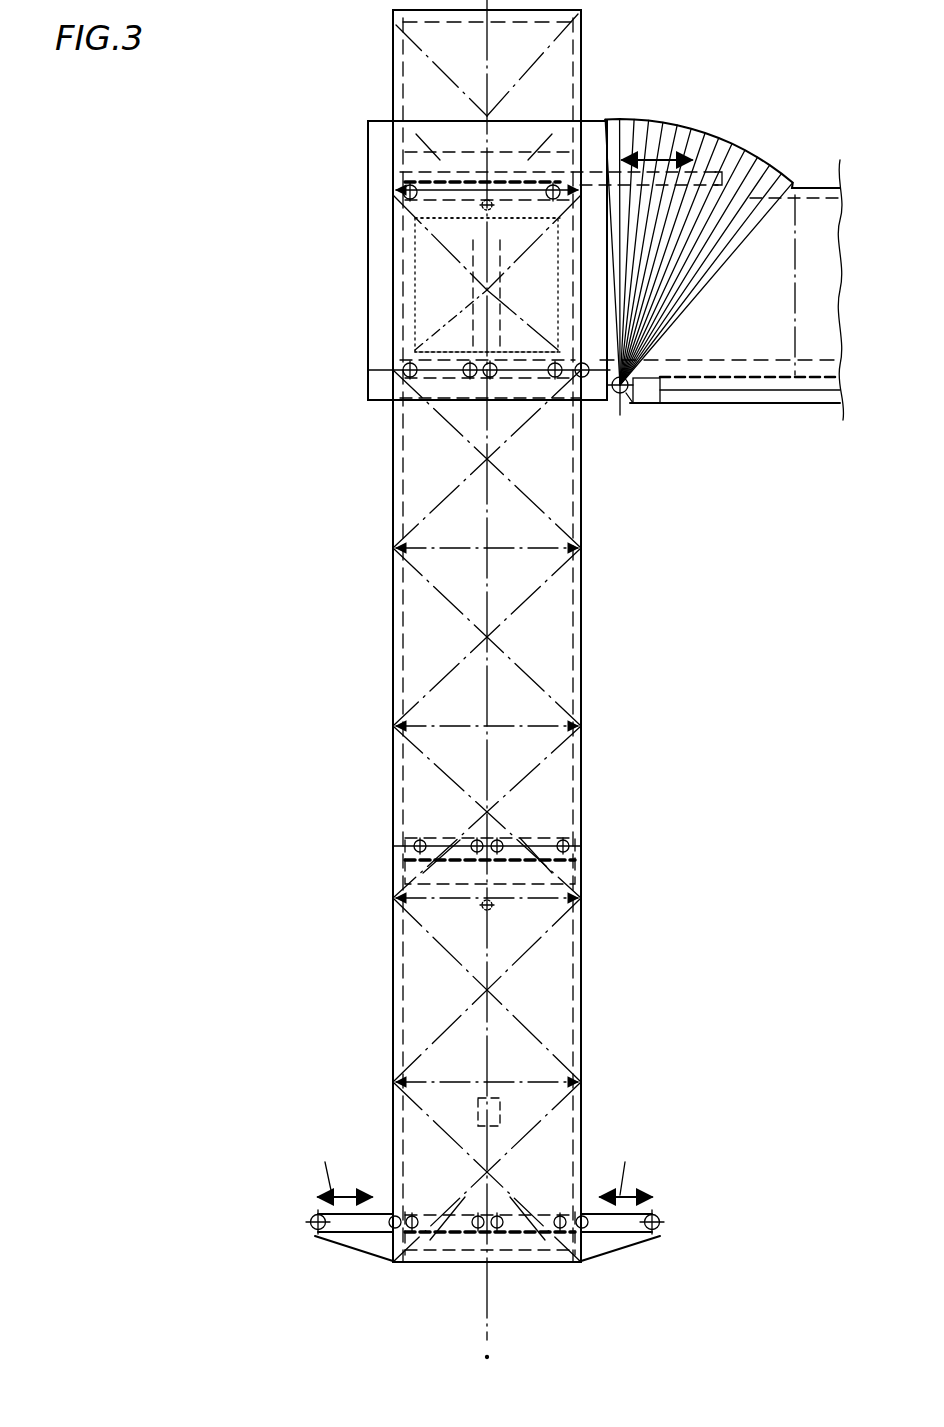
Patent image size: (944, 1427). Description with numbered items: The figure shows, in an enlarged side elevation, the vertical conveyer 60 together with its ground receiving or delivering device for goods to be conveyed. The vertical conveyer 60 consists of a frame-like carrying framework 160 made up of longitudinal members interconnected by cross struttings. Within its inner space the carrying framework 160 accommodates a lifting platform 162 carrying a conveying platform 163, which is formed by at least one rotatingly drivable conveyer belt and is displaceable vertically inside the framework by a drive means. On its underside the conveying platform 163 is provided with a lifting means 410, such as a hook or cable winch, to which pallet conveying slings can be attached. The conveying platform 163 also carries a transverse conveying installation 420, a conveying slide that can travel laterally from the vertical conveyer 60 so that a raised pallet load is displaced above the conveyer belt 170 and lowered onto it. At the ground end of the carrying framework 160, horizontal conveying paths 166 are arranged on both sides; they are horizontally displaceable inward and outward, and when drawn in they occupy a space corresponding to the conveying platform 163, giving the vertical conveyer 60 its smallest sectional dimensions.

The vertical conveyer 60 is at (388, 716).
The carrying framework 160 is at (455, 1005).
The lifting platform 162 is at (398, 167).
The conveying platform 163 is at (540, 160).
The lifting means 410 is at (482, 207).
The transverse conveying installation 420 is at (400, 190).
The conveyer belt 170 is at (745, 365).
The conveying path 166 is at (318, 1233).